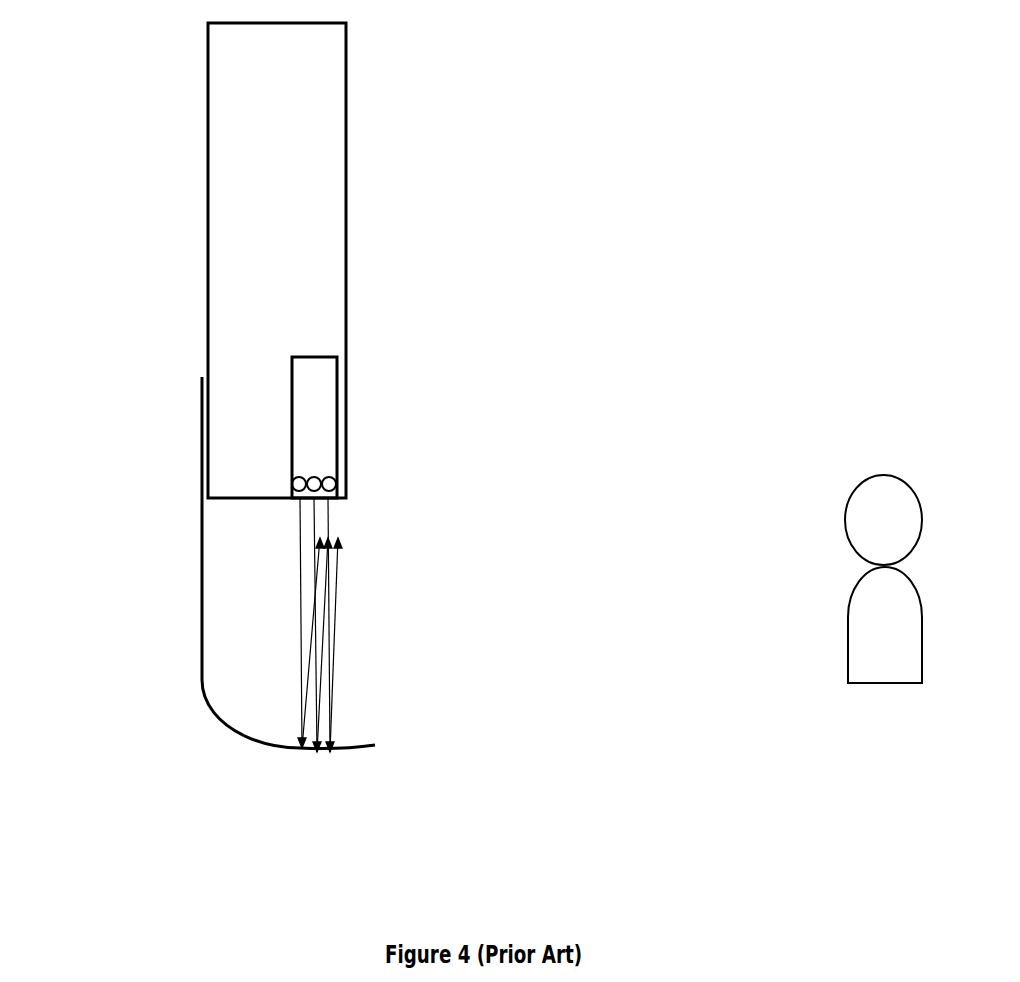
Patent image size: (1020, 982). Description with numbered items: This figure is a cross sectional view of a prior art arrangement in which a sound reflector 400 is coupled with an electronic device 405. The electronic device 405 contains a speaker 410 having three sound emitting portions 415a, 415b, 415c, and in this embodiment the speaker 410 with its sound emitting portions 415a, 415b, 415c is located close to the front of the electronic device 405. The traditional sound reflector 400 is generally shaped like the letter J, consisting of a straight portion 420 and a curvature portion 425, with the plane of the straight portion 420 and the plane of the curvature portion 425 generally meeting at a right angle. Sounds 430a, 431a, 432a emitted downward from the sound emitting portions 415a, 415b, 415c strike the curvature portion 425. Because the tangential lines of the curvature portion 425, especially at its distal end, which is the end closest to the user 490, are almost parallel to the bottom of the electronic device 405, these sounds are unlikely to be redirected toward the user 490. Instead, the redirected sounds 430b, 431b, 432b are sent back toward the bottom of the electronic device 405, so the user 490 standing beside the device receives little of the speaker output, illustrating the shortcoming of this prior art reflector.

The sound reflector 400 is at (165, 380).
The electronic device 405 is at (346, 157).
The speaker 410 is at (338, 398).
The sound emitting portion 415a is at (298, 475).
The sound emitting portion 415b is at (318, 477).
The sound emitting portion 415c is at (336, 480).
The straight portion 420 is at (202, 598).
The curvature portion 425 is at (272, 748).
The sound 430a is at (300, 542).
The redirected sound 430b is at (308, 645).
The sound 431a is at (338, 534).
The redirected sound 431b is at (317, 665).
The sound 432a is at (328, 513).
The redirected sound 432b is at (336, 603).
The user 490 is at (862, 478).